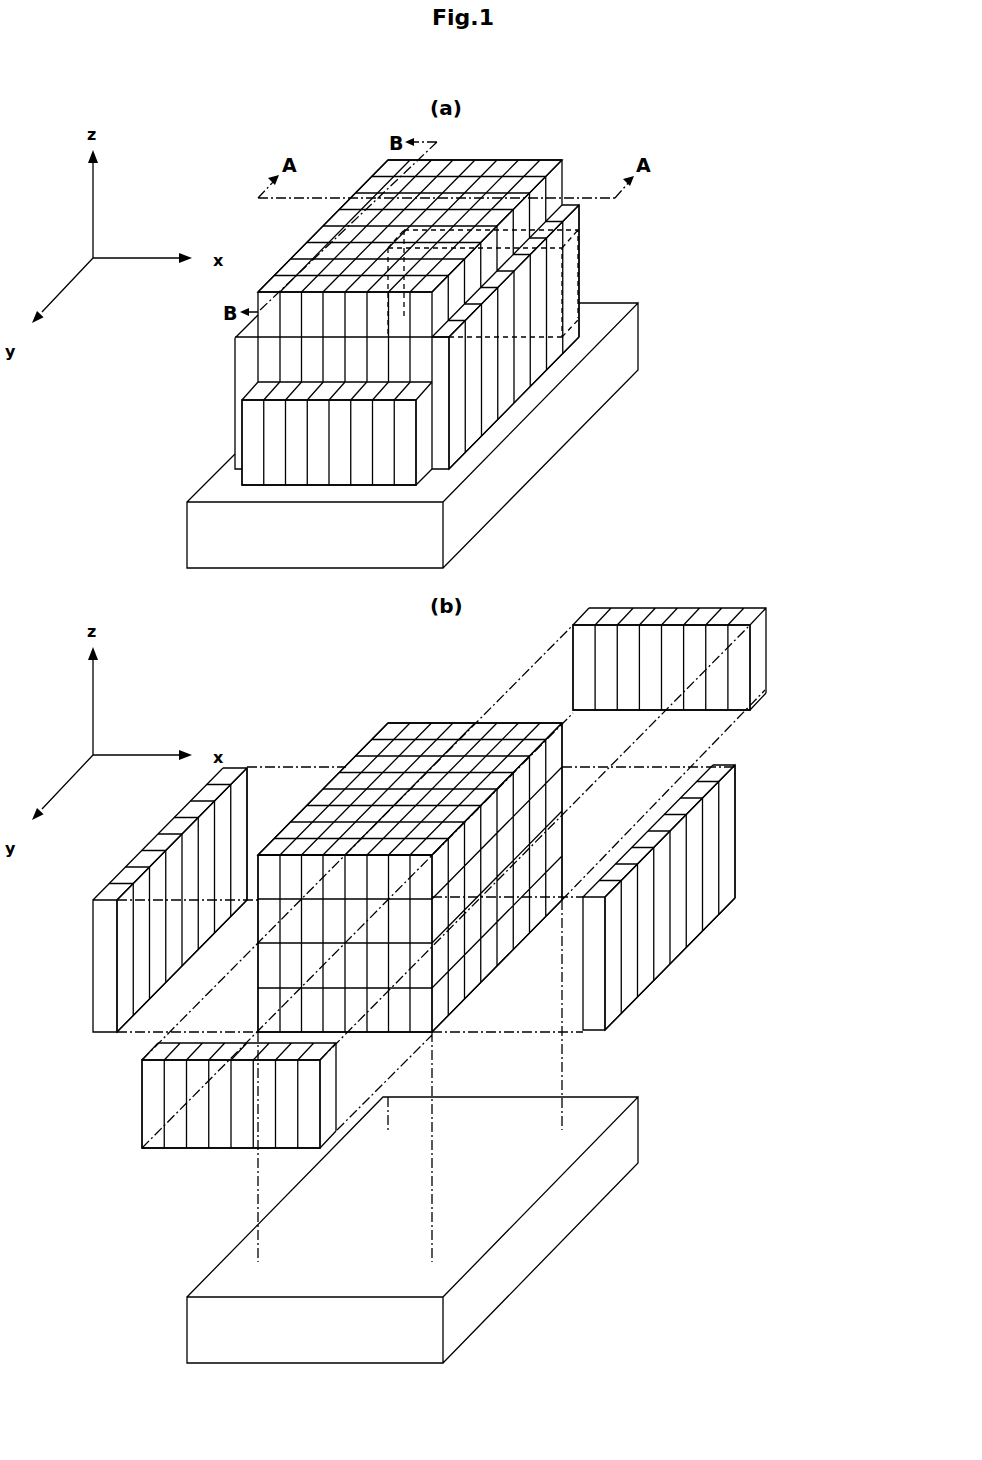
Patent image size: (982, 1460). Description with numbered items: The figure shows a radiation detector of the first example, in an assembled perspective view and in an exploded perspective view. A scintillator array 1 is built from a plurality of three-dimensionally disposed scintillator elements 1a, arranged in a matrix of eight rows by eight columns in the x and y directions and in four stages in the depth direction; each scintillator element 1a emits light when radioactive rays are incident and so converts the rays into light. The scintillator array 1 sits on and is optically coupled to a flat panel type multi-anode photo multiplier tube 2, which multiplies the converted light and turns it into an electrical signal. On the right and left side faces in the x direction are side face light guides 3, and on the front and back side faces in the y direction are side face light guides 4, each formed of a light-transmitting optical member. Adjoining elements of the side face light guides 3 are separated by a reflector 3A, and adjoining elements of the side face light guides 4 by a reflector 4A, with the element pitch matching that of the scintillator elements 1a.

The scintillator array 1 is at (380, 156).
The scintillator element 1a is at (378, 188).
The flat panel type multi-anode photo multiplier tube 2 is at (640, 333).
The side face light guide 3 is at (579, 218).
The reflector 3A is at (571, 337).
The side face light guide 4 is at (584, 283).
The reflector 4A is at (262, 449).